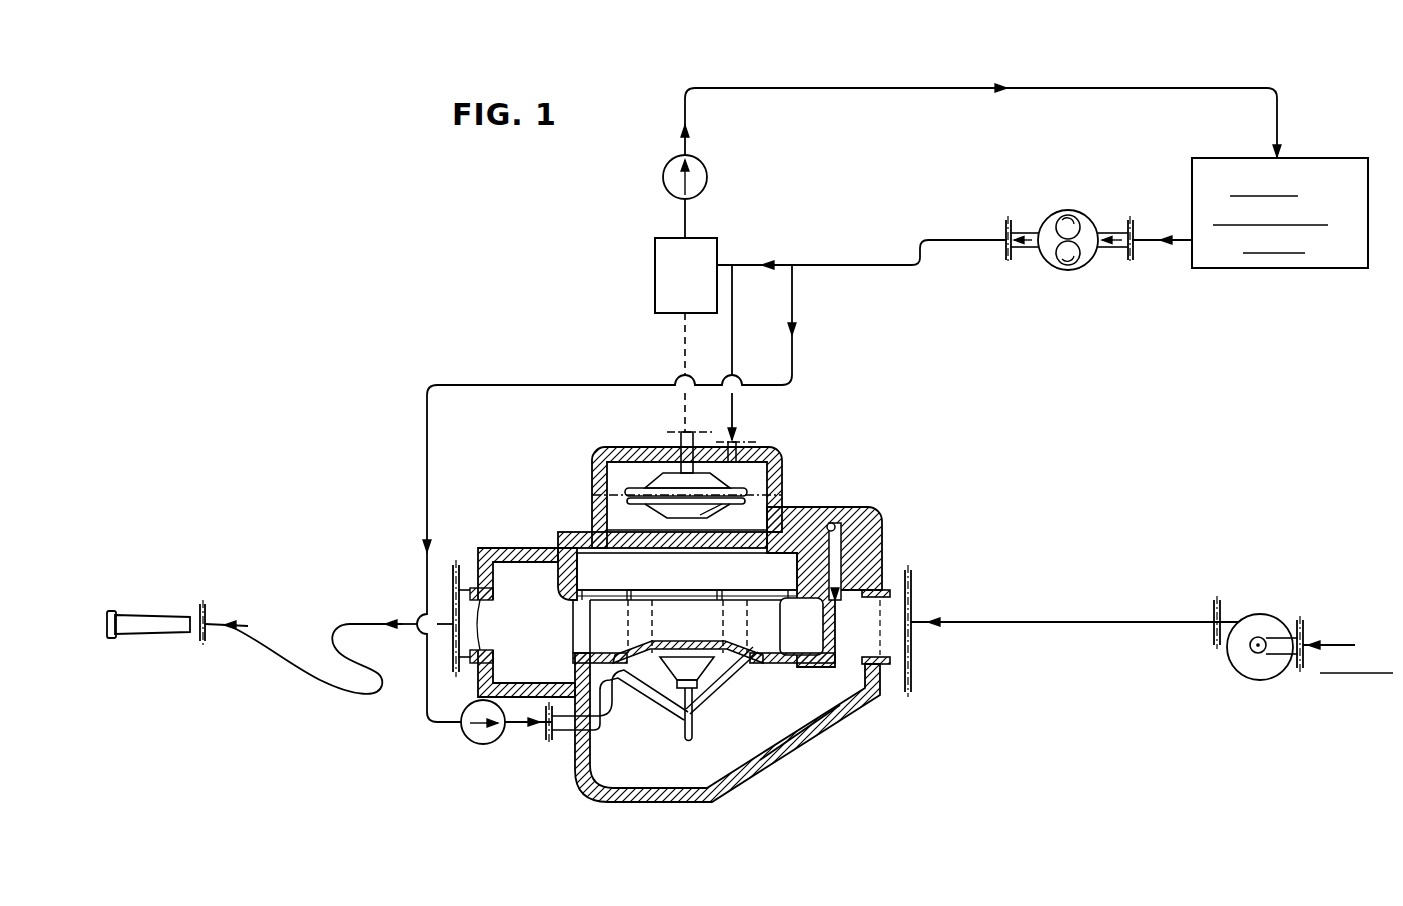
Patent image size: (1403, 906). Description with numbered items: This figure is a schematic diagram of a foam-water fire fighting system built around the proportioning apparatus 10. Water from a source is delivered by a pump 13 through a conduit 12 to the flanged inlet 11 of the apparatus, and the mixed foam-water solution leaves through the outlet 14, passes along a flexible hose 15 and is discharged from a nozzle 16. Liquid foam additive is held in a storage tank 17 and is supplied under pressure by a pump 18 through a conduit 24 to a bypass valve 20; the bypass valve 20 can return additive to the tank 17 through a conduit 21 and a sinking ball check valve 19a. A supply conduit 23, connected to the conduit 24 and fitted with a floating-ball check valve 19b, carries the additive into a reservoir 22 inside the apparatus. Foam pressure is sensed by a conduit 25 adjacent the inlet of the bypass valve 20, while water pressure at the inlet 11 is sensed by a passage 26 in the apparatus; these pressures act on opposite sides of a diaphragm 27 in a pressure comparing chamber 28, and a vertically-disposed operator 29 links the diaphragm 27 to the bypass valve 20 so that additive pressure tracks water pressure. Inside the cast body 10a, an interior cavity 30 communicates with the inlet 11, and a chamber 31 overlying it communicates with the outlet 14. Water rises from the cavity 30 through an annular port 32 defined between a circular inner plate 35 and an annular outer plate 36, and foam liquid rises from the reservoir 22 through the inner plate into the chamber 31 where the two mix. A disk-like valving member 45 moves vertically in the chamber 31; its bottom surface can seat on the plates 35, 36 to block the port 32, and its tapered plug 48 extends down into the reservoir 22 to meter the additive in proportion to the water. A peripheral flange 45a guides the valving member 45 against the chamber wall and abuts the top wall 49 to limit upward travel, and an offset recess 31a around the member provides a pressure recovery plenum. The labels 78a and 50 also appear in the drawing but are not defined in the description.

The proportioning apparatus 10 is at (885, 515).
The cast body 10a is at (790, 757).
The inlet 11 is at (892, 667).
The conduit 12 is at (1070, 632).
The pump 13 is at (1258, 625).
The outlet 14 is at (470, 590).
The flexible hose 15 is at (322, 684).
The discharge nozzle 16 is at (136, 614).
The storage tank 17 is at (1268, 270).
The pump 18 is at (1058, 213).
The sinking ball check valve 19a is at (705, 168).
The floating-ball check valve 19b is at (470, 742).
The bypass valve 20 is at (656, 252).
The conduit 21 is at (855, 87).
The reservoir 22 is at (660, 698).
The supply conduit 23 is at (442, 385).
The conduit 24 is at (818, 265).
The conduit 25 is at (733, 345).
The passage 26 is at (836, 525).
The diaphragm 27 is at (625, 492).
The pressure comparing chamber 28 is at (623, 468).
The lower chamber portion 78a is at (765, 515).
The vertically-disposed operator 29 is at (700, 430).
The interior cavity 30 is at (683, 790).
The chamber 31 is at (603, 565).
The recess 31a is at (800, 612).
The annular port 32 is at (845, 672).
The circular inner plate 35 is at (740, 640).
The annular outer plate 36 is at (587, 650).
The disk-like valving member 45 is at (700, 636).
The radially-extending peripheral flange 45a is at (730, 592).
The tapered plug 48 is at (715, 682).
The wall 49 is at (687, 545).
The needle 50 is at (695, 728).